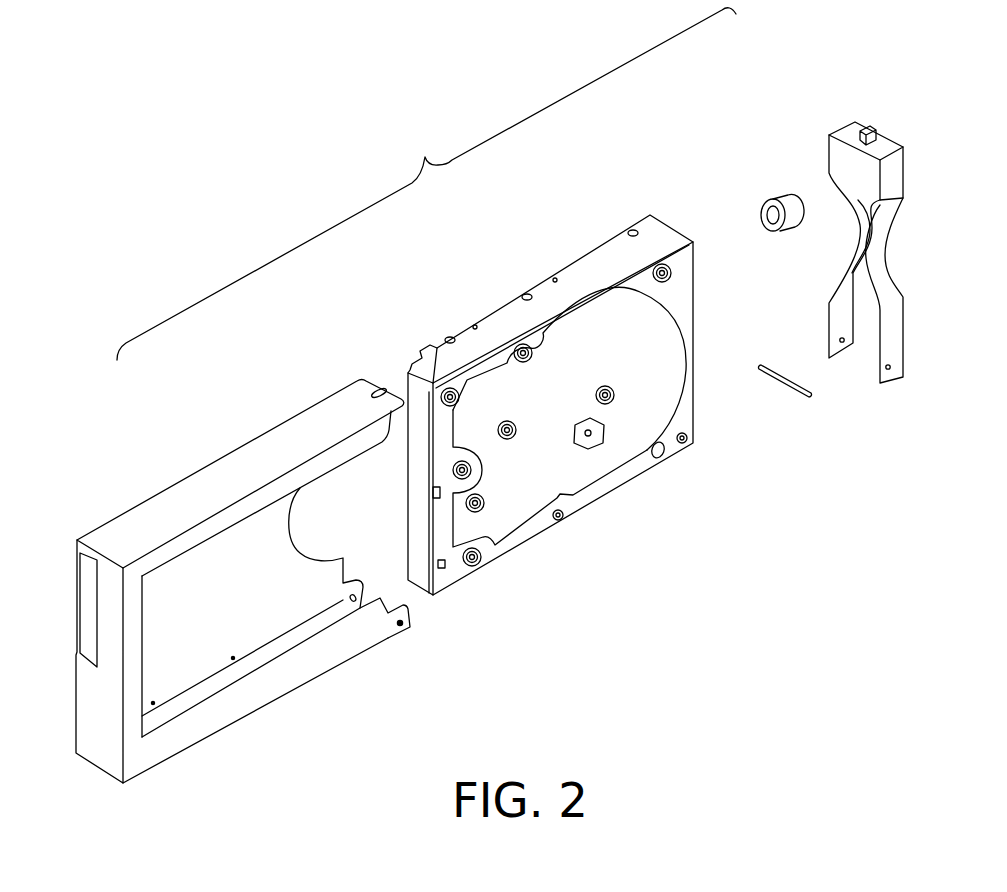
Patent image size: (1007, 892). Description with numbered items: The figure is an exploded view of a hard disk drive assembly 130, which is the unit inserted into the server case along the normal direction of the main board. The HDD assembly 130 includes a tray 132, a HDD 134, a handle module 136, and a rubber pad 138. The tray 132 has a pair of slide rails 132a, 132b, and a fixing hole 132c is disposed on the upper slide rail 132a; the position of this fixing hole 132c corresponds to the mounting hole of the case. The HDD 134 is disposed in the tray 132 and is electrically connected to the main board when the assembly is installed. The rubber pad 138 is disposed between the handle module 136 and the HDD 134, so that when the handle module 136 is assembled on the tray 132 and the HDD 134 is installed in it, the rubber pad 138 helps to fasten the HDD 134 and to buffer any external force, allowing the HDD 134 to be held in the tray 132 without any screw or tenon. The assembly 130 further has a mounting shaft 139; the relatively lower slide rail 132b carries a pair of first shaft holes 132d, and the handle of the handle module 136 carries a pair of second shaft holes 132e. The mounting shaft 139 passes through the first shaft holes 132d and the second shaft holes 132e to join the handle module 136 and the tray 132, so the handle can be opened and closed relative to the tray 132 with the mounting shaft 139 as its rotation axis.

The HDD assembly 130 is at (426, 184).
The tray 132 is at (271, 544).
The slide rail 132a is at (278, 438).
The slide rail 132b is at (310, 663).
The fixing hole 132c is at (372, 387).
The first shaft hole 132d is at (404, 629).
The second shaft hole 132e is at (892, 375).
The HDD 134 is at (560, 272).
The handle module 136 is at (850, 267).
The rubber pad 138 is at (779, 198).
The mounting shaft 139 is at (782, 388).